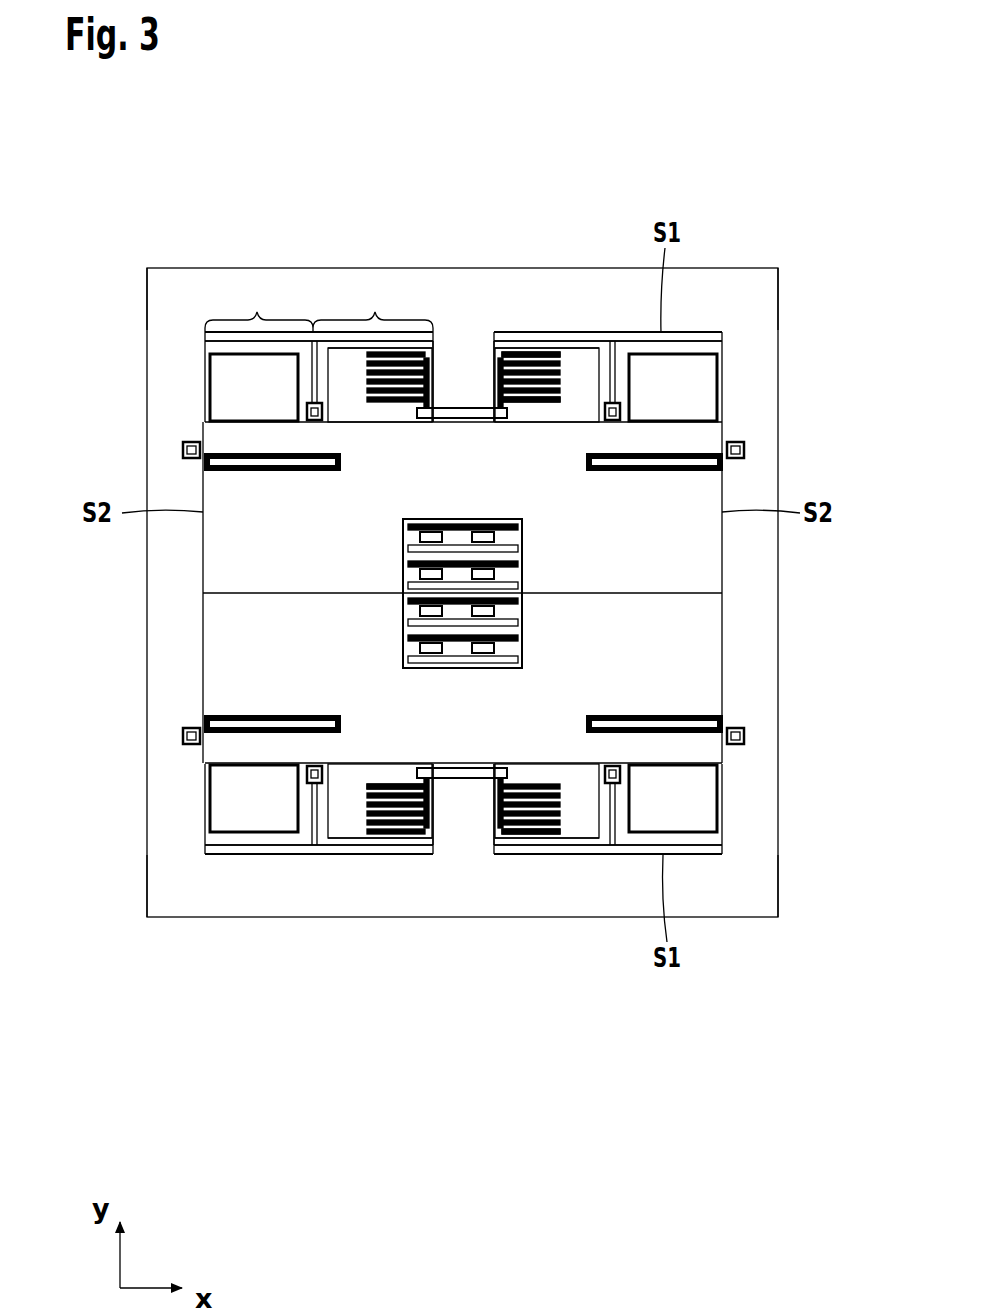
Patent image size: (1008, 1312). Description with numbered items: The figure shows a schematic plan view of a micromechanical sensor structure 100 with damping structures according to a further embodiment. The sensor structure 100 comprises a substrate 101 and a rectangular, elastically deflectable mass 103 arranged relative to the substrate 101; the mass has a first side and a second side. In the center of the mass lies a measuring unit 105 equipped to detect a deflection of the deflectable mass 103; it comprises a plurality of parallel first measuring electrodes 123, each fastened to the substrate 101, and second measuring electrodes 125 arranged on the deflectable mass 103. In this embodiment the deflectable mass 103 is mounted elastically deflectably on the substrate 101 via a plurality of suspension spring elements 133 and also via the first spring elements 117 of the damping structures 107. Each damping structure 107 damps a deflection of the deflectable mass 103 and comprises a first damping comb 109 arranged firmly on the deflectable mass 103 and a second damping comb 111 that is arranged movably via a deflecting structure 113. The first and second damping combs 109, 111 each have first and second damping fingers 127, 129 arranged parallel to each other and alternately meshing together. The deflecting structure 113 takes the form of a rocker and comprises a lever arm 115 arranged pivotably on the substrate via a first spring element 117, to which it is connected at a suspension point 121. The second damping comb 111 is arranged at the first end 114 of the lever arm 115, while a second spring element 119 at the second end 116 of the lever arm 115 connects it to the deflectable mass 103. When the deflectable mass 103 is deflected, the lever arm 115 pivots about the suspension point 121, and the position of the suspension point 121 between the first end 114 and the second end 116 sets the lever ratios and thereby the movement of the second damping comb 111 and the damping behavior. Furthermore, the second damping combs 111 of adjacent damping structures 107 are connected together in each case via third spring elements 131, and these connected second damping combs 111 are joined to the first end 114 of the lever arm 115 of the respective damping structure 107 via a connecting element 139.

The micromechanical sensor structure 100 is at (486, 520).
The substrate 101 is at (778, 907).
The deflectable mass 103 is at (688, 540).
The measuring unit 105 is at (461, 593).
The damping structure 107 is at (205, 330).
The first damping comb 109 is at (327, 763).
The second damping comb 111 is at (420, 375).
The deflecting structure 113 is at (232, 250).
The first end 114 is at (532, 352).
The lever arm 115 is at (337, 336).
The second end 116 is at (205, 335).
The first spring element 117 is at (300, 372).
The second spring element 119 is at (208, 349).
The suspension point 121 is at (313, 345).
The first measuring electrode 123 is at (404, 546).
The second measuring electrode 125 is at (522, 630).
The first damping finger 127 is at (543, 360).
The second damping finger 129 is at (545, 410).
The third spring element 131 is at (460, 408).
The suspension spring element 133 is at (183, 450).
The connecting element 139 is at (492, 400).